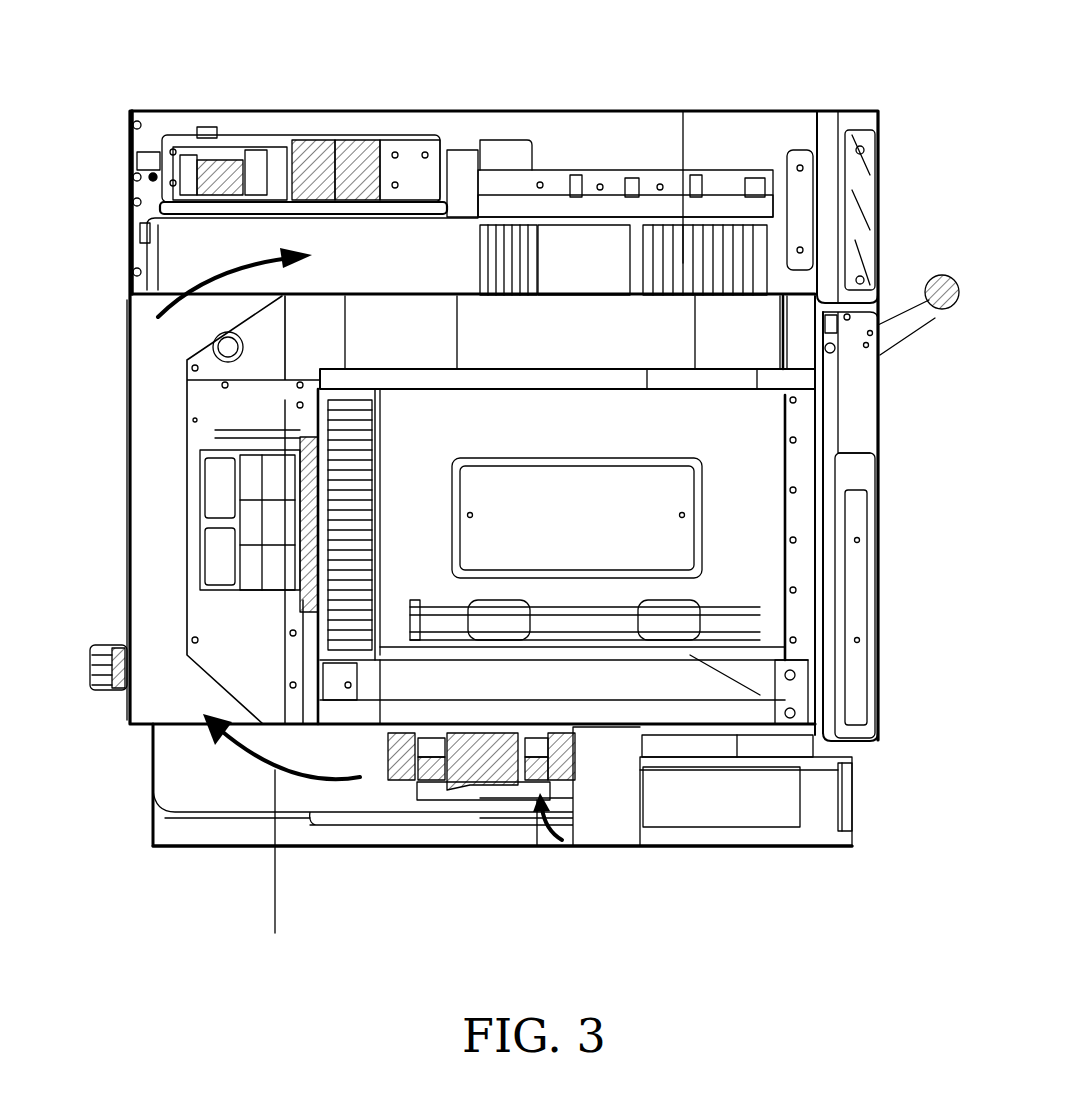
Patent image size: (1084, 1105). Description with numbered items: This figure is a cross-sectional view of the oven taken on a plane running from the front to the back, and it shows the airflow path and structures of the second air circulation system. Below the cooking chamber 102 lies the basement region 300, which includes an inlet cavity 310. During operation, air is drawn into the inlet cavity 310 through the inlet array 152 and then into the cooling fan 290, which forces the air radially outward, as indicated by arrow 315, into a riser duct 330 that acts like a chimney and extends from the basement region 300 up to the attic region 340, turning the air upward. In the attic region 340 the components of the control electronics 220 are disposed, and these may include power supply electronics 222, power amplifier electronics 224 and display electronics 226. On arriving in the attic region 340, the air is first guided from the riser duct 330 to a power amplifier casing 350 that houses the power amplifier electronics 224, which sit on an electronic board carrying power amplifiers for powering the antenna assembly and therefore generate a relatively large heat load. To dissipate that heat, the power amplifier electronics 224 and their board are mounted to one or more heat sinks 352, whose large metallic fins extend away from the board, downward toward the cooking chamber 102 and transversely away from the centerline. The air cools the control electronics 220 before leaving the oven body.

The cooking chamber 102 is at (713, 437).
The inlet array 152 is at (722, 795).
The control electronics 220 is at (505, 185).
The power supply electronics 222 is at (320, 166).
The power amplifier electronics 224 is at (637, 187).
The display electronics 226 is at (842, 190).
The cooling fan 290 is at (487, 780).
The basement region 300 is at (880, 755).
The inlet cavity 310 is at (250, 825).
The arrow 315 is at (275, 933).
The riser duct 330 is at (160, 552).
The attic region 340 is at (113, 100).
The power amplifier casing 350 is at (607, 168).
The heat sinks 352 is at (683, 40).